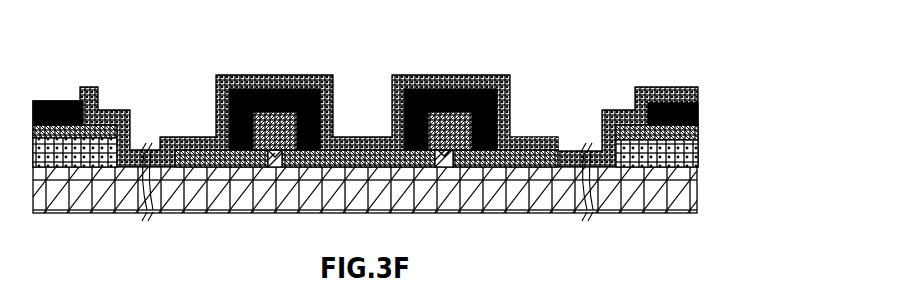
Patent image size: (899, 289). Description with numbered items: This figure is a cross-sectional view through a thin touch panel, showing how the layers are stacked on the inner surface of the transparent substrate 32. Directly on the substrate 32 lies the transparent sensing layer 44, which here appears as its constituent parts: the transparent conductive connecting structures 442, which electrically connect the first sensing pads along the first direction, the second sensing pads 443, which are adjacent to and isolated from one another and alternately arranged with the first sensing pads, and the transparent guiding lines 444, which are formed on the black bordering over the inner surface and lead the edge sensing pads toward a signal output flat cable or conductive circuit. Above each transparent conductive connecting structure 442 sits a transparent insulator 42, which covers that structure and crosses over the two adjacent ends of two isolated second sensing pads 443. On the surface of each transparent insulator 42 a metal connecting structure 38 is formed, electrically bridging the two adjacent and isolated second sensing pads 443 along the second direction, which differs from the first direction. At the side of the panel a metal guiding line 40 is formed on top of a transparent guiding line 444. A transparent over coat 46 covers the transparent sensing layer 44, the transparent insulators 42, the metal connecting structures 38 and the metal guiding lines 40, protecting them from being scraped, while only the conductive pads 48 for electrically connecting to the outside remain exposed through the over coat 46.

The transparent substrate 32 is at (692, 195).
The metal connecting structure 38 is at (475, 125).
The metal guiding line 40 is at (698, 112).
The transparent insulator 42 is at (510, 75).
The transparent sensing layer 44 is at (528, 145).
The transparent over coat 46 is at (455, 80).
The conductive pad 48 is at (67, 116).
The transparent conductive connecting structure 442 is at (449, 150).
The second sensing pad 443 is at (414, 162).
The transparent guiding line 444 is at (698, 132).